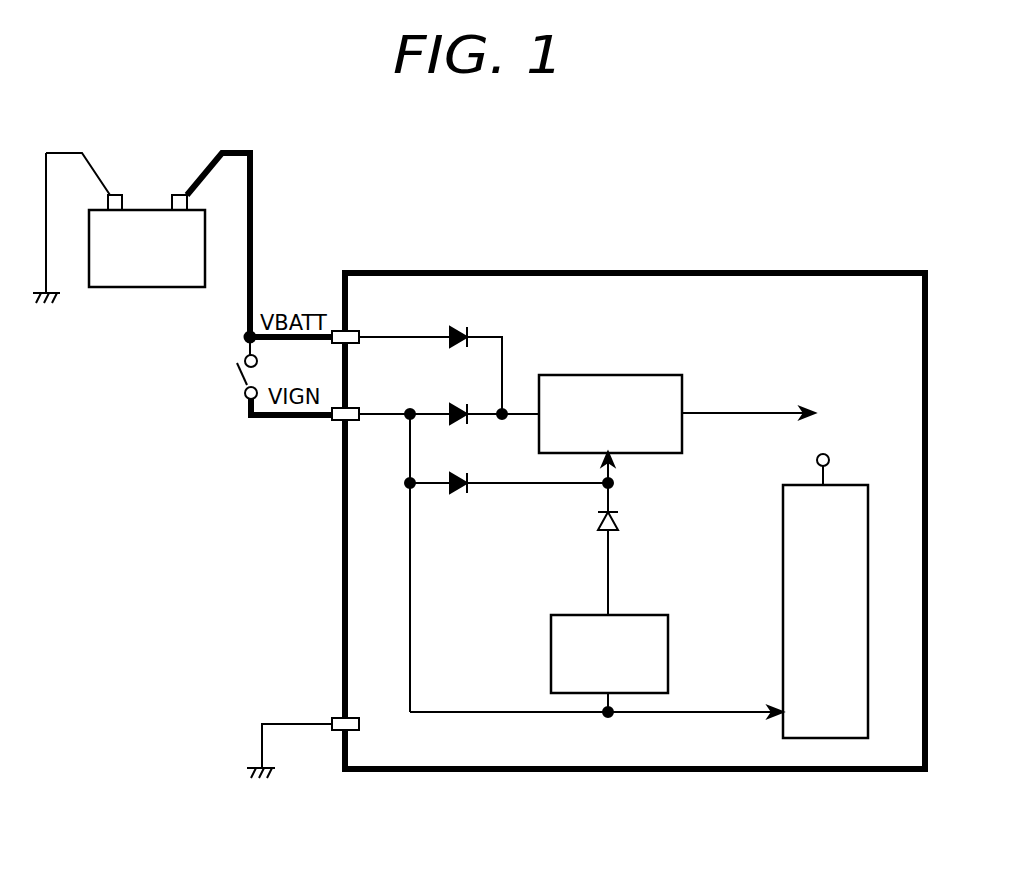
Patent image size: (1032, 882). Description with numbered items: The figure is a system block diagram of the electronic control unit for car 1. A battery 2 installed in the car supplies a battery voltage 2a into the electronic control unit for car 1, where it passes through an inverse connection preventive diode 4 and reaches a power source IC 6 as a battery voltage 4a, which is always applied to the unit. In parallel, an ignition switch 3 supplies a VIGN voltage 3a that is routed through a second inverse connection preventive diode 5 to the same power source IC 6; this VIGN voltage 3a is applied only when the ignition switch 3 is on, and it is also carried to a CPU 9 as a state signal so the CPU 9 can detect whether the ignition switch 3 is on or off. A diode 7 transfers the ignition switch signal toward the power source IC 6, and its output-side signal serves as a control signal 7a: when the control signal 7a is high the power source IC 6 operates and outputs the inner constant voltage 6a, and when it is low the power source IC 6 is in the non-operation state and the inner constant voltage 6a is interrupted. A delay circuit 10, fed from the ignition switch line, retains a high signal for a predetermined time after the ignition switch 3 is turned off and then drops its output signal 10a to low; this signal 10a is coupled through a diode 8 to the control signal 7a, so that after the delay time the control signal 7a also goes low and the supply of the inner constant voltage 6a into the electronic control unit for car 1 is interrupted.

The electronic control unit for car 1 is at (830, 272).
The battery 2 is at (147, 213).
The battery voltage 2a is at (385, 335).
The ignition switch 3 is at (238, 377).
The VIGN voltage 3a is at (378, 408).
The inverse connection preventive diode 4 is at (462, 332).
The battery voltage 4a is at (503, 407).
The inverse connection preventive diode 5 is at (462, 407).
The power source IC 6 is at (605, 375).
The inner constant voltage (VCC) 6a is at (693, 412).
The diode 7 is at (460, 473).
The control signal 7a is at (613, 482).
The diode 8 is at (620, 522).
The CPU 9 is at (865, 487).
The delay circuit 10 is at (551, 652).
The signal 10a is at (610, 580).